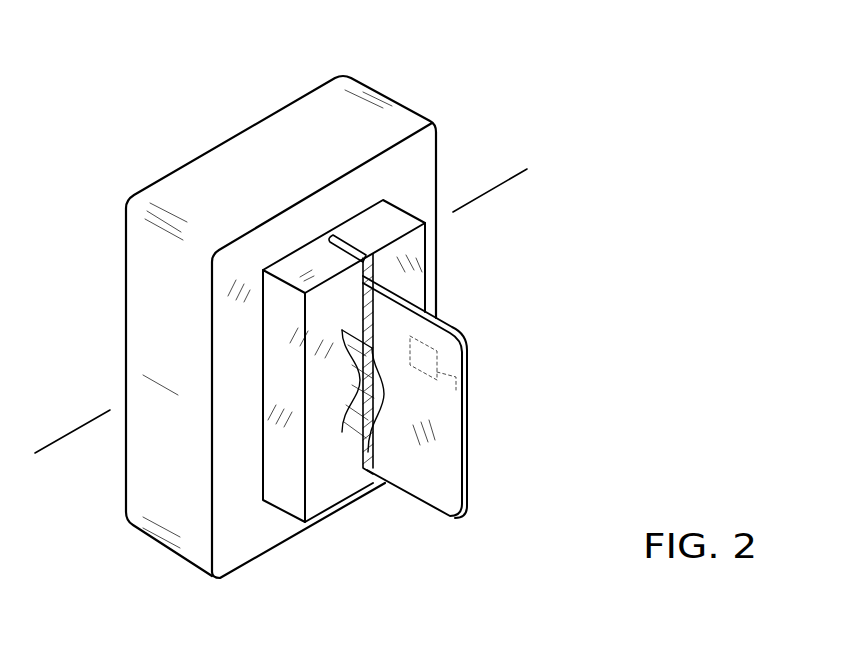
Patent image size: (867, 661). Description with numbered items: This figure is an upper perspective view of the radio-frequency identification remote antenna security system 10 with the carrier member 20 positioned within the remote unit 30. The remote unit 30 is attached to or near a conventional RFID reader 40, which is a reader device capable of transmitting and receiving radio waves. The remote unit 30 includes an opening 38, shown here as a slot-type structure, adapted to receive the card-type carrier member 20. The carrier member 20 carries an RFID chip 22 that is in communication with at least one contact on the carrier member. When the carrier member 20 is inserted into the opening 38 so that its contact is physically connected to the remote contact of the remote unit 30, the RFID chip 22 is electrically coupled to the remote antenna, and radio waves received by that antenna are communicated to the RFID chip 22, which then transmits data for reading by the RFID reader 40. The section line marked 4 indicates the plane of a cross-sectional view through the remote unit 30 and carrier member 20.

The radio-frequency identification (RFID) remote antenna security system 10 is at (402, 317).
The carrier member 20 is at (484, 397).
The RFID chip 22 is at (462, 387).
The remote unit 30 is at (355, 214).
The opening 38 is at (366, 222).
The RFID reader 40 is at (195, 160).
The section line 4- 4 is at (490, 187).